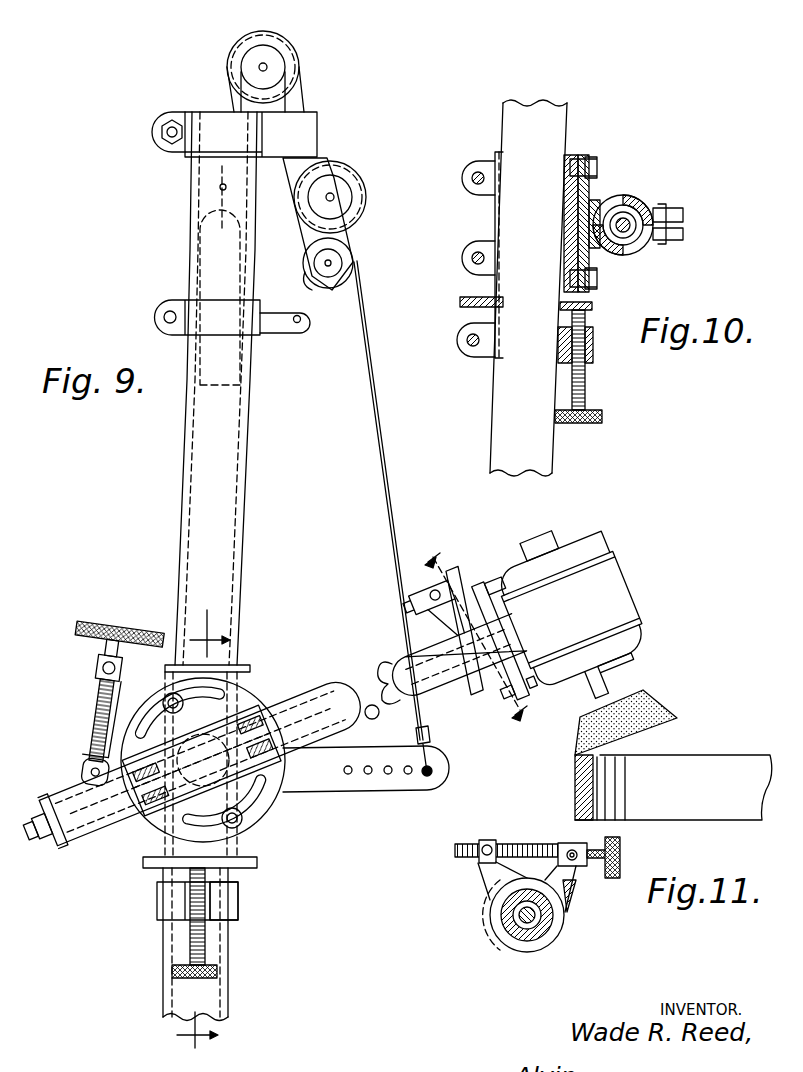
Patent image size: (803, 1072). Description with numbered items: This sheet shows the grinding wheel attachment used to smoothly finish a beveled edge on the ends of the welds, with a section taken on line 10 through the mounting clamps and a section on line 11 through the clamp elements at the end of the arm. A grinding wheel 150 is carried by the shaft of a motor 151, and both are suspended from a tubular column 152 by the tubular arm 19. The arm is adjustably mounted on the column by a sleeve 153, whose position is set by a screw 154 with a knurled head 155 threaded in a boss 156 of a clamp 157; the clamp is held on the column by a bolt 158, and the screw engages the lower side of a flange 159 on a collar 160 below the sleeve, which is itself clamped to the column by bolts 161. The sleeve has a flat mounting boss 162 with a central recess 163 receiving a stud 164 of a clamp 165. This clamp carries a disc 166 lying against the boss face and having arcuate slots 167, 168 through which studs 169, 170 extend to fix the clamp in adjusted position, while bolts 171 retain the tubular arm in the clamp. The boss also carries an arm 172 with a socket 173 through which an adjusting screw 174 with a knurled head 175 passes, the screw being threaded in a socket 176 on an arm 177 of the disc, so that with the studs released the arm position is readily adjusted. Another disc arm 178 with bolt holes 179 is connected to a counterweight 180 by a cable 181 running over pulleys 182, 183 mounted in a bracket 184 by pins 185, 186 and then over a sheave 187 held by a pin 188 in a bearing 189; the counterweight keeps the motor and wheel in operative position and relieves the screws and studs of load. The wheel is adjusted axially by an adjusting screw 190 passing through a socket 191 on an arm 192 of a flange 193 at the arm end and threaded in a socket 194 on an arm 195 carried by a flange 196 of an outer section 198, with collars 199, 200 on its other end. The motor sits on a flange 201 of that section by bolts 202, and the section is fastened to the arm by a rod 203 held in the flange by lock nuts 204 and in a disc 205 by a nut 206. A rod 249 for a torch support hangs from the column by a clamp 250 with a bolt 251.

In FIG. 9, the section line 10 is at (195, 834).
In FIG. 9, the section line 11 is at (489, 628).
In FIG. 9, the tubular arm 19 is at (318, 692).
In FIG. 9, the grinding wheel 150 is at (650, 712).
In FIG. 9, the motor 151 is at (628, 590).
In FIG. 9, the tubular column 152 is at (178, 542).
In FIG. 10, the tubular column 152 is at (490, 452).
In FIG. 9, the sleeve 153 is at (243, 676).
In FIG. 10, the sleeve 153 is at (496, 152).
In FIG. 9, the screw 154 is at (206, 945).
In FIG. 10, the screw 154 is at (586, 396).
In FIG. 9, the knurled head 155 is at (172, 972).
In FIG. 10, the knurled head 155 is at (583, 424).
In FIG. 9, the boss 156 is at (208, 903).
In FIG. 10, the boss 156 is at (595, 346).
In FIG. 9, the clamp 157 is at (157, 905).
In FIG. 10, the bolt 158 is at (472, 352).
In FIG. 10, the flange 159 is at (462, 302).
In FIG. 10, the collar 160 is at (590, 305).
In FIG. 10, the bolts 161 is at (474, 186).
In FIG. 10, the mounting boss 162 is at (572, 155).
In FIG. 10, the recess 163 is at (565, 216).
In FIG. 10, the stud 164 is at (568, 236).
In FIG. 10, the clamp 165 is at (636, 200).
In FIG. 10, the disc 166 is at (597, 165).
In FIG. 9, the arcuate slot 167 is at (100, 719).
In FIG. 9, the arcuate slot 168 is at (245, 805).
In FIG. 9, the stud 169 is at (162, 702).
In FIG. 9, the stud 170 is at (236, 828).
In FIG. 10, the bolts 171 is at (685, 215).
In FIG. 9, the arm 172 is at (150, 665).
In FIG. 9, the socket 173 is at (97, 666).
In FIG. 9, the adjusting screw 174 is at (88, 748).
In FIG. 9, the knurled head 175 is at (72, 632).
In FIG. 9, the socket 176 is at (84, 773).
In FIG. 9, the arm 177 is at (86, 838).
In FIG. 9, the arm 178 is at (414, 790).
In FIG. 9, the bolt holes 179 is at (390, 776).
In FIG. 9, the counterweight 180 is at (244, 398).
In FIG. 9, the cable 181 is at (393, 544).
In FIG. 9, the pulley 182 is at (318, 288).
In FIG. 9, the pulley 183 is at (334, 200).
In FIG. 9, the bracket 184 is at (306, 250).
In FIG. 9, the pin 185 is at (362, 187).
In FIG. 9, the pin 186 is at (334, 264).
In FIG. 9, the sheave 187 is at (296, 49).
In FIG. 9, the pin 188 is at (261, 63).
In FIG. 9, the bearing 189 is at (250, 80).
In FIG. 11, the adjusting screw 190 is at (505, 834).
In FIG. 11, the socket 191 is at (574, 884).
In FIG. 11, the arm 192 is at (573, 916).
In FIG. 9, the flange 193 is at (414, 700).
In FIG. 11, the flange 193 is at (522, 952).
In FIG. 11, the socket 194 is at (475, 860).
In FIG. 11, the arm 195 is at (488, 890).
In FIG. 9, the flange 196 is at (478, 705).
In FIG. 9, the outer section 198 is at (508, 652).
In FIG. 11, the collar 199 is at (565, 843).
In FIG. 11, the collar 200 is at (604, 840).
In FIG. 9, the flange 201 is at (480, 590).
In FIG. 9, the bolts 202 is at (525, 690).
In FIG. 9, the rod 203 is at (362, 690).
In FIG. 9, the lock nuts 204 is at (385, 723).
In FIG. 9, the disc 205 is at (58, 846).
In FIG. 9, the nut 206 is at (30, 838).
In FIG. 9, the rod 249 is at (290, 333).
In FIG. 9, the clamp 250 is at (210, 300).
In FIG. 9, the bolt 251 is at (165, 318).